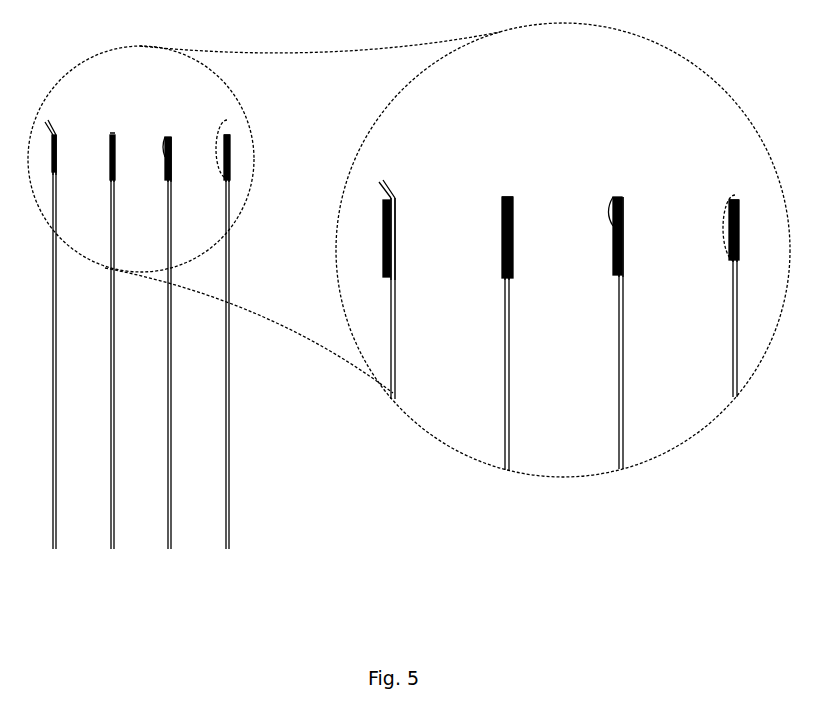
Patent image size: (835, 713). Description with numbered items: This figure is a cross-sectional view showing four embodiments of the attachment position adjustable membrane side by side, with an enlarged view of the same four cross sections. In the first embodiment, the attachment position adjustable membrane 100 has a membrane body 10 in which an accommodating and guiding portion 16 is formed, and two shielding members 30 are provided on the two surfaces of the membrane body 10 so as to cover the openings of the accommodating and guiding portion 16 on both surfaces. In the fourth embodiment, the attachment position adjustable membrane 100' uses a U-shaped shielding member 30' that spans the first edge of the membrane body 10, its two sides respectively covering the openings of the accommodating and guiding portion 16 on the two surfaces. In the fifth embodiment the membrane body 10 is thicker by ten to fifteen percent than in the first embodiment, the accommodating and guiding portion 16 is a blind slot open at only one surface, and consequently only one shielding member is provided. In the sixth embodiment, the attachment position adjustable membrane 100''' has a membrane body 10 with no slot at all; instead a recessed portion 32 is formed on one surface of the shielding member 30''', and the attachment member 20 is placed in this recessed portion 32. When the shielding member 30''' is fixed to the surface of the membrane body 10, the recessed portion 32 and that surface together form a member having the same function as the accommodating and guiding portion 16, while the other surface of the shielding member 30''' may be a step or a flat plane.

The membrane body 10 is at (761, 323).
The accommodating and guiding portion 16 is at (57, 150).
The attachment member 20 is at (57, 170).
The shielding member 30 is at (203, 149).
The shielding member 30' is at (302, 148).
The shielding member 30''' is at (478, 150).
The recessed portion 32 is at (230, 135).
The attachment position adjustable membrane 100 is at (218, 508).
The attachment position adjustable membrane 100' is at (309, 535).
The attachment position adjustable membrane 100''' is at (491, 505).